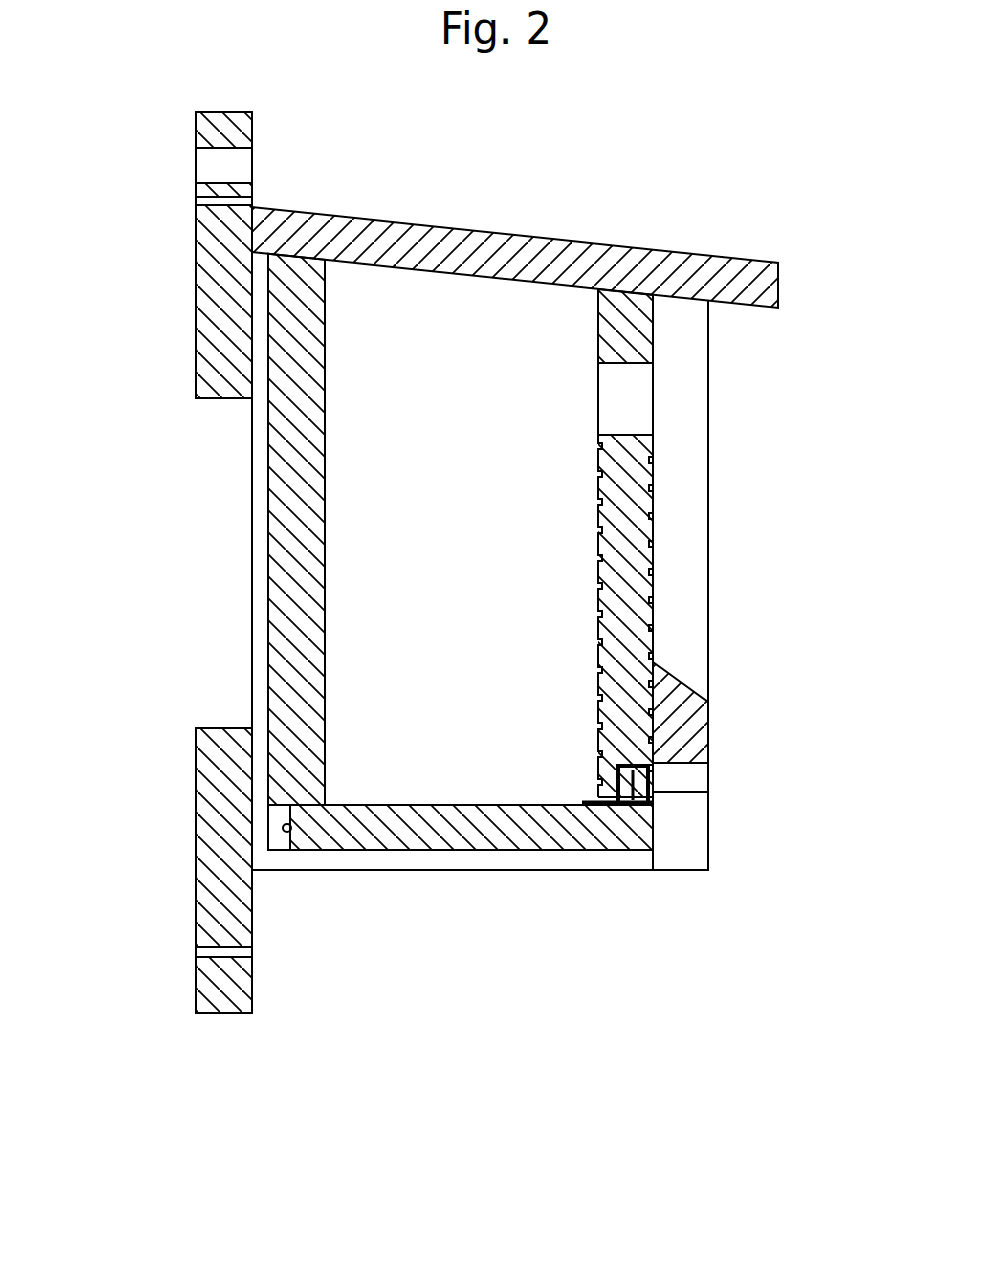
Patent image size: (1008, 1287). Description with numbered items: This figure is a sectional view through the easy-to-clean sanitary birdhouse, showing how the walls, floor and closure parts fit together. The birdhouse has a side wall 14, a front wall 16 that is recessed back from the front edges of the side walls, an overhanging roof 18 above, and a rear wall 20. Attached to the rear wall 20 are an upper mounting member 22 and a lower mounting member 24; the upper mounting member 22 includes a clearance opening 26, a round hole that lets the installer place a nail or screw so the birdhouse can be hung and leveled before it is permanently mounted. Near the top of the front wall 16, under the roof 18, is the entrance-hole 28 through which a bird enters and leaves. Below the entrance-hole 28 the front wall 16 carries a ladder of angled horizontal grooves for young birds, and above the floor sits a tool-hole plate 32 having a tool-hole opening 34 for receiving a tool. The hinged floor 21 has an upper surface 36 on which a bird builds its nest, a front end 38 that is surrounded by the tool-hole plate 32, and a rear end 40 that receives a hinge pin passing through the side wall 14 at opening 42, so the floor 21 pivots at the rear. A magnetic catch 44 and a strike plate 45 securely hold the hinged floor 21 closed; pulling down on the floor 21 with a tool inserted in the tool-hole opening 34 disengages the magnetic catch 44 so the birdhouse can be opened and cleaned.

The side wall 14 is at (697, 398).
The front wall 16 is at (600, 512).
The overhanging roof 18 is at (563, 247).
The rear wall 20 is at (288, 487).
The hinged floor 21 is at (437, 817).
The upper mounting member 22 is at (237, 132).
The lower mounting member 24 is at (222, 995).
The clearance opening 26 is at (212, 168).
The entrance-hole 28 is at (618, 392).
The tool-hole plate 32 is at (688, 718).
The tool-hole opening 34 is at (695, 783).
The upper surface of bottom plate 36 is at (383, 807).
The front end 38 is at (640, 825).
The rear end 40 is at (285, 812).
The opening 42 is at (289, 833).
The magnetic catch 44 is at (658, 793).
The strike plate 45 is at (603, 803).